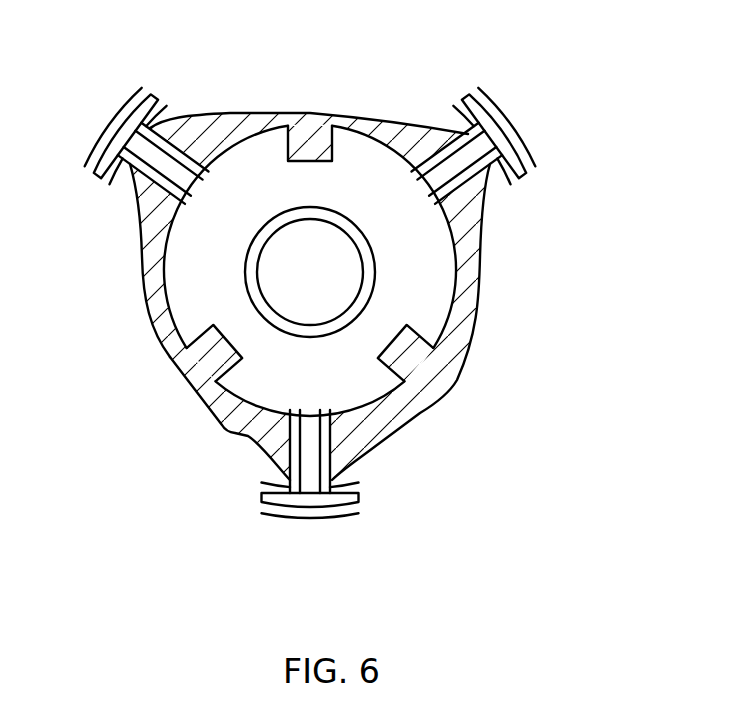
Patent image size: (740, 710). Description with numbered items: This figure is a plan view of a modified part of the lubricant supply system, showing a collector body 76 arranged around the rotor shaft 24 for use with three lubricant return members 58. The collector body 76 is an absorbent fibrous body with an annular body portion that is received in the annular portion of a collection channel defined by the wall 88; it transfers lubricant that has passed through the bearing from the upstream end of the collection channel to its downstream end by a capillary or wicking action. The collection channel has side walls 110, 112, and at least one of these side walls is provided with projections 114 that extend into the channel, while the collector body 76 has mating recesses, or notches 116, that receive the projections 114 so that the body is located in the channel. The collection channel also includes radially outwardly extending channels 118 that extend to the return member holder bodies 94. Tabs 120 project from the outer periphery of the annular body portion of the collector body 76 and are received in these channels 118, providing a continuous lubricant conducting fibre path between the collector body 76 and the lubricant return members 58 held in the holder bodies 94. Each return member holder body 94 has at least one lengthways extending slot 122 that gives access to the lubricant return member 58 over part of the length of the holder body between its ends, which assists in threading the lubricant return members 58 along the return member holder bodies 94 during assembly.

The rotor shaft 24 is at (326, 286).
The lubricant return member 58 is at (160, 101).
The collector body 76 is at (185, 280).
The wall 88 is at (207, 397).
The return member holder body 94 is at (140, 93).
The side wall 110 is at (277, 327).
The side wall 112 is at (163, 308).
The projection 114 is at (312, 142).
The notch 116 is at (423, 337).
The radially outwardly extending channel 118 is at (484, 168).
The tab 120 is at (138, 145).
The slot 122 is at (531, 170).